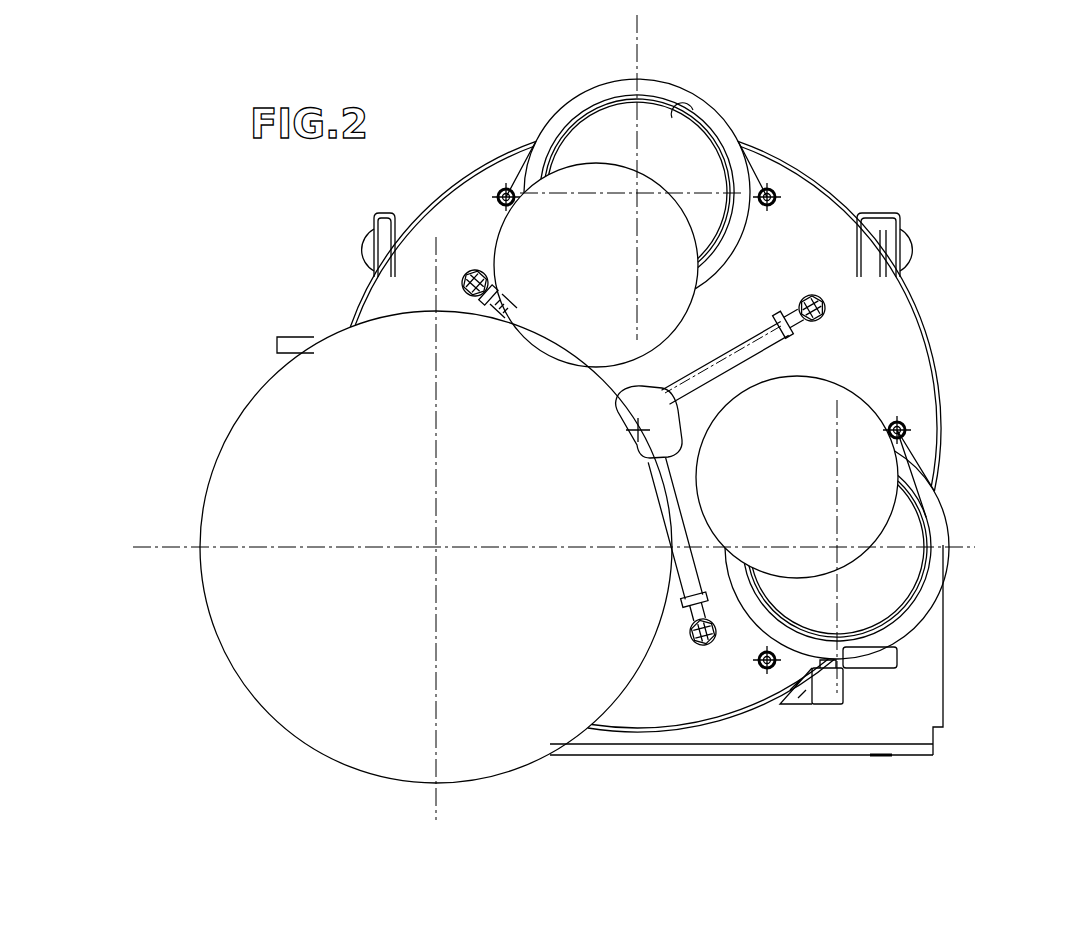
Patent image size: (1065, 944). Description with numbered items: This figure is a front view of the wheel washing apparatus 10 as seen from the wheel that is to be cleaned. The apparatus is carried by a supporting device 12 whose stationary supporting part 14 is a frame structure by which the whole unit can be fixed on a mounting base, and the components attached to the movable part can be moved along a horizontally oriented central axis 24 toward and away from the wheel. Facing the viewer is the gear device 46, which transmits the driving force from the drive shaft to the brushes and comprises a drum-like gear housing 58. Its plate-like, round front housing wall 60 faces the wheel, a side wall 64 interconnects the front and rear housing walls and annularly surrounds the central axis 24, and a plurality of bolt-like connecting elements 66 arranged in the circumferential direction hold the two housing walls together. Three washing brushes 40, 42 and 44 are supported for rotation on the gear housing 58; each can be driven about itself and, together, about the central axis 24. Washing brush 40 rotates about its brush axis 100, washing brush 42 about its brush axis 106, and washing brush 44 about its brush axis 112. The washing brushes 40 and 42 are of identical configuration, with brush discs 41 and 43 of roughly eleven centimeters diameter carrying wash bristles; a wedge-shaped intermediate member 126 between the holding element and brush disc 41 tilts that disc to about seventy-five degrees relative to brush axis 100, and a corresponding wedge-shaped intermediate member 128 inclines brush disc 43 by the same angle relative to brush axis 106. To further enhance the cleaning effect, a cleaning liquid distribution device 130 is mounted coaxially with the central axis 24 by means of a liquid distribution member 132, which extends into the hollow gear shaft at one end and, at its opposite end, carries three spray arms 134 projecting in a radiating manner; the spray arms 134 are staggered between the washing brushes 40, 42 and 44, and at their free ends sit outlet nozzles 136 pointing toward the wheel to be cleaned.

The wheel washing apparatus 10 is at (892, 108).
The supporting device 12 is at (962, 684).
The stationary supporting part 14 is at (926, 663).
The central axis 24 is at (634, 433).
The washing brush 40 is at (733, 138).
The brush disc 41 is at (698, 165).
The washing brush 42 is at (886, 544).
The brush disc 43 is at (921, 590).
The washing brush 44 is at (296, 690).
The gear device 46 is at (938, 295).
The gear housing 58 is at (908, 357).
The front housing wall 60 is at (791, 269).
The side wall 64 is at (857, 212).
The connecting elements 66 is at (777, 197).
The brush axis 100 is at (621, 205).
The brush axis 106 is at (832, 542).
The brush axis 112 is at (450, 541).
The wedge-shaped intermediate member 126 is at (665, 159).
The wedge-shaped intermediate member 128 is at (938, 570).
The cleaning liquid distribution device 130 is at (668, 372).
The liquid distribution member 132 is at (654, 454).
The spray arms 134 is at (762, 334).
The outlet nozzles 136 is at (825, 305).